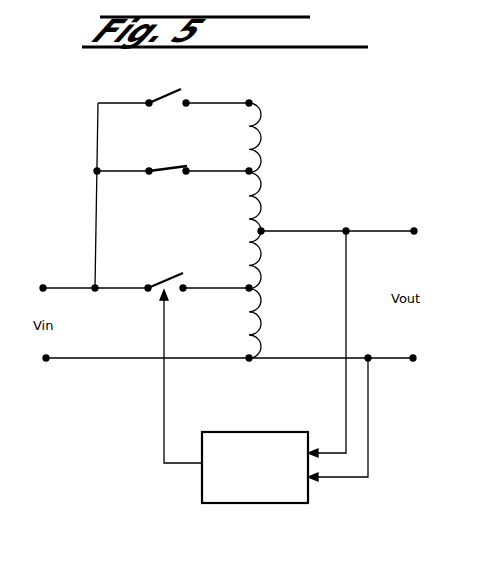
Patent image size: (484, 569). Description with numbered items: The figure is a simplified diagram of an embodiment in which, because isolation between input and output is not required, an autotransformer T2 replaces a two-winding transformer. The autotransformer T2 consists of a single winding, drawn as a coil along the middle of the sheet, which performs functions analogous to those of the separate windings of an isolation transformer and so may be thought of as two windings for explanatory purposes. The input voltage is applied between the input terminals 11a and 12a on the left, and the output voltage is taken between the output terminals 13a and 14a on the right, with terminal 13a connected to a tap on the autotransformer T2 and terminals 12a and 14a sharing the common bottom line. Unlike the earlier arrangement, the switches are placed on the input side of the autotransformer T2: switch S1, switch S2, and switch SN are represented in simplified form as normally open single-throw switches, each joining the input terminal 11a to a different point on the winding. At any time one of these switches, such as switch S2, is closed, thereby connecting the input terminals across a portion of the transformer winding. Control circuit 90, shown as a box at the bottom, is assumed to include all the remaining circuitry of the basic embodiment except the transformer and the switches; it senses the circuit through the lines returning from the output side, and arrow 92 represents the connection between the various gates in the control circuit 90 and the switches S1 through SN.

The input terminal 11a is at (43, 288).
The input terminal 12a is at (46, 358).
The output terminal 13a is at (414, 231).
The output terminal 14a is at (413, 358).
The control circuit 90 is at (277, 423).
The arrow 92 is at (165, 327).
The autotransformer T2 is at (265, 213).
The switch SN is at (178, 95).
The switch S2 is at (141, 161).
The switch S1 is at (174, 279).